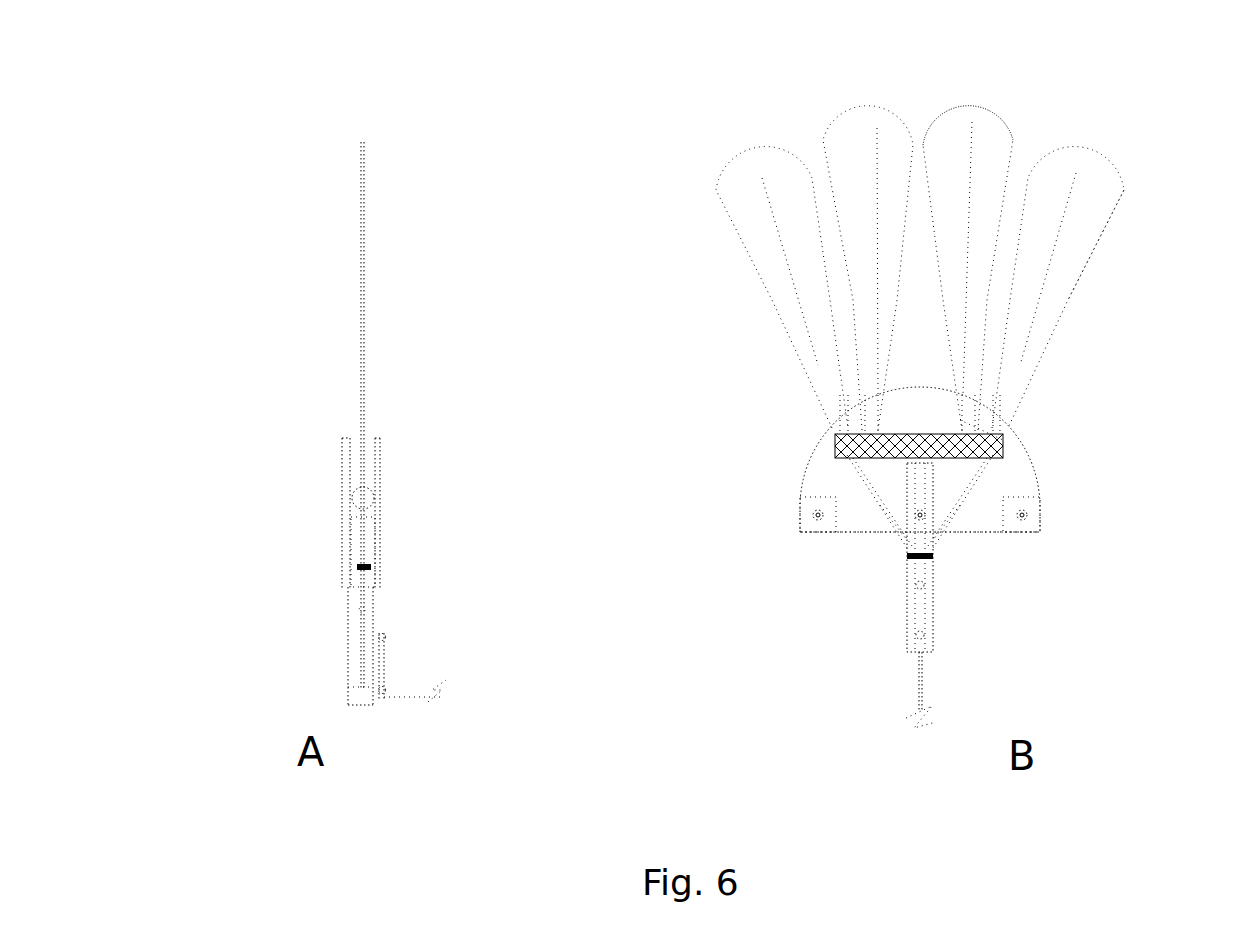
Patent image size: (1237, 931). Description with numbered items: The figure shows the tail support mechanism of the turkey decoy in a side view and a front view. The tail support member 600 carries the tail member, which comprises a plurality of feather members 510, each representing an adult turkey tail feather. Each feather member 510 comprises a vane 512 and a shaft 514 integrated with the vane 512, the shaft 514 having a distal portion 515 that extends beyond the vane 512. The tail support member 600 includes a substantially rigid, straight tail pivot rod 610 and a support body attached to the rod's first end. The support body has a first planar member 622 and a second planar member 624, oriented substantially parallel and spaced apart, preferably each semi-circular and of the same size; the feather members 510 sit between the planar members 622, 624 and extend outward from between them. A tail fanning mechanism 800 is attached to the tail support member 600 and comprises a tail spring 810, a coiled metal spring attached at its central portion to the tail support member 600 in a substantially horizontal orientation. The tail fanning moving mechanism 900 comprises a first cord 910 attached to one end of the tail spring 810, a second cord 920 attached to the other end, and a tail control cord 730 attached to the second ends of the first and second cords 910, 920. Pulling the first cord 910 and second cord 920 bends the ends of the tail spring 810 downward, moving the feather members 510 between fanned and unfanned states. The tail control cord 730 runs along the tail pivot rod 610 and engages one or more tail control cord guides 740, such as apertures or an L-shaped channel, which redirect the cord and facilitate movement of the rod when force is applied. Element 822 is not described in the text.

In FIG. 6A, the feather member 510 is at (363, 265).
In FIG. 6B, the feather member 510 is at (735, 170).
In FIG. 6B, the vane 512 is at (1088, 243).
In FIG. 6B, the shaft 514 is at (823, 367).
In FIG. 6B, the distal portion 515 is at (978, 88).
In FIG. 6A, the tail support member 600 is at (332, 528).
In FIG. 6B, the tail support member 600 is at (775, 490).
In FIG. 6B, the tail pivot rod 610 is at (930, 612).
In FIG. 6A, the first planar member 622 is at (380, 448).
In FIG. 6A, the second planar member 624 is at (341, 448).
In FIG. 6A, the tail control cord 730 is at (386, 660).
In FIG. 6B, the tail control cord 730 is at (920, 682).
In FIG. 6A, the tail control cord guide 740 is at (386, 636).
In FIG. 6B, the tail fanning mechanism 800 is at (1056, 475).
In FIG. 6A, the tail spring 810 is at (371, 490).
In FIG. 6B, the tail spring 810 is at (1003, 442).
In FIG. 6B, the clamp strip 822 is at (817, 446).
In FIG. 6B, the tail fanning moving mechanism 900 is at (877, 553).
In FIG. 6B, the first cord 910 is at (877, 505).
In FIG. 6B, the second cord 920 is at (962, 507).